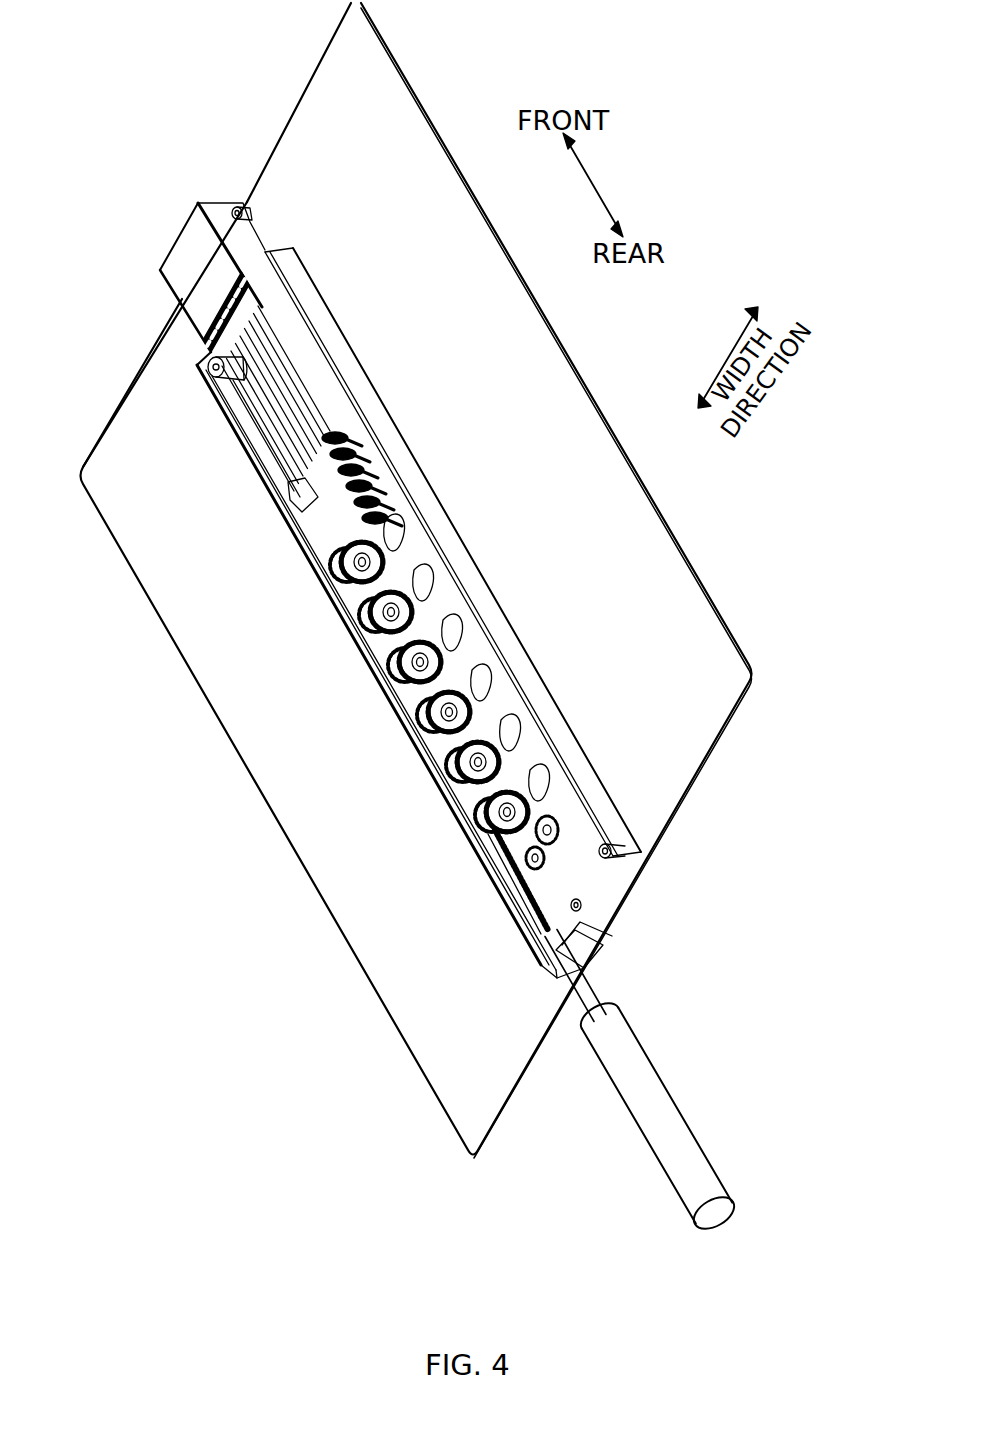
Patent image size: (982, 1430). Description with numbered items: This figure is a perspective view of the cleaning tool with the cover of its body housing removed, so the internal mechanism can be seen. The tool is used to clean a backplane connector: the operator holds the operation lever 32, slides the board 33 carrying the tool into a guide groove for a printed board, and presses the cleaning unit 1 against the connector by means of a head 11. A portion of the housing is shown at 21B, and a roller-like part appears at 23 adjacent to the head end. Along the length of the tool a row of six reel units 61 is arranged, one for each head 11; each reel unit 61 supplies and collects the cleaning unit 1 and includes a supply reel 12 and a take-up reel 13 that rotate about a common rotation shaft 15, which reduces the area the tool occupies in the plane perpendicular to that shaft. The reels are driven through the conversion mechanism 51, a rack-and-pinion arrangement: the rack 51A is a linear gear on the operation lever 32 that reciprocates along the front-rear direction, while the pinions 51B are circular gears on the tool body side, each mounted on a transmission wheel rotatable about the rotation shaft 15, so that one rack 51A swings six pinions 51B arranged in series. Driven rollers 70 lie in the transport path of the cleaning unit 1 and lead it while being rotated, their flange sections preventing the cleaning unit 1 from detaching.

The head 11 is at (162, 222).
The drive unit cover 21B is at (187, 276).
The roller 23 is at (193, 360).
The cleaning unit 1 is at (310, 383).
The driven roller 70 is at (337, 430).
The reel unit 61 is at (300, 588).
The conversion mechanism 51 is at (429, 741).
The rack 51A is at (517, 888).
The pinion 51B is at (477, 812).
The supply reel 12 is at (553, 833).
The take-up reel 13 is at (545, 855).
The rotation shaft 15 is at (597, 880).
The operation lever 32 is at (648, 1082).
The board 33 is at (400, 1016).